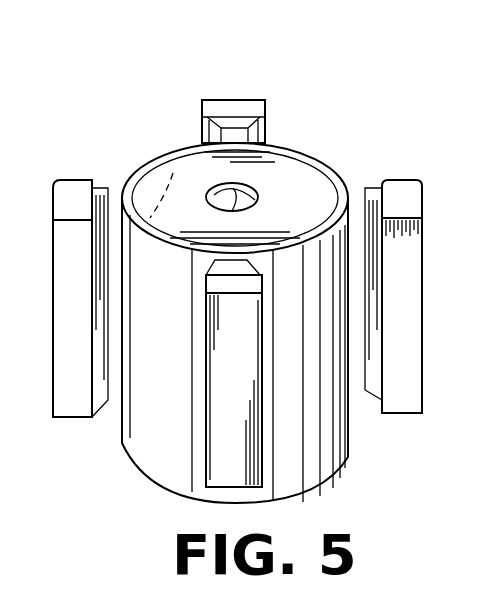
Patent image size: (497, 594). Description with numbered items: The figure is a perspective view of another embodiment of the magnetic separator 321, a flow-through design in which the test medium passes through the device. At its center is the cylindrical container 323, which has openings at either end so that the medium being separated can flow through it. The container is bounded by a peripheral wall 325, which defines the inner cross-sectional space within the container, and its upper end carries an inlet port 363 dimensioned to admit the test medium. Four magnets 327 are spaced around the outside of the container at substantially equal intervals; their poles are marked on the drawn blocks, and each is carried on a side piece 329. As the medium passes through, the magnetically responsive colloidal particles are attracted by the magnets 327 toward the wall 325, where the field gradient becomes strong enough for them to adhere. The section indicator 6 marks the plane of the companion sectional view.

The magnetic separator 321 is at (318, 112).
The cylindrical container 323 is at (178, 146).
The peripheral wall 325 is at (175, 168).
The magnets 327 is at (246, 100).
The magnet side faces 329 is at (97, 192).
The inlet port 363 is at (258, 196).
The section line 6 is at (297, 160).